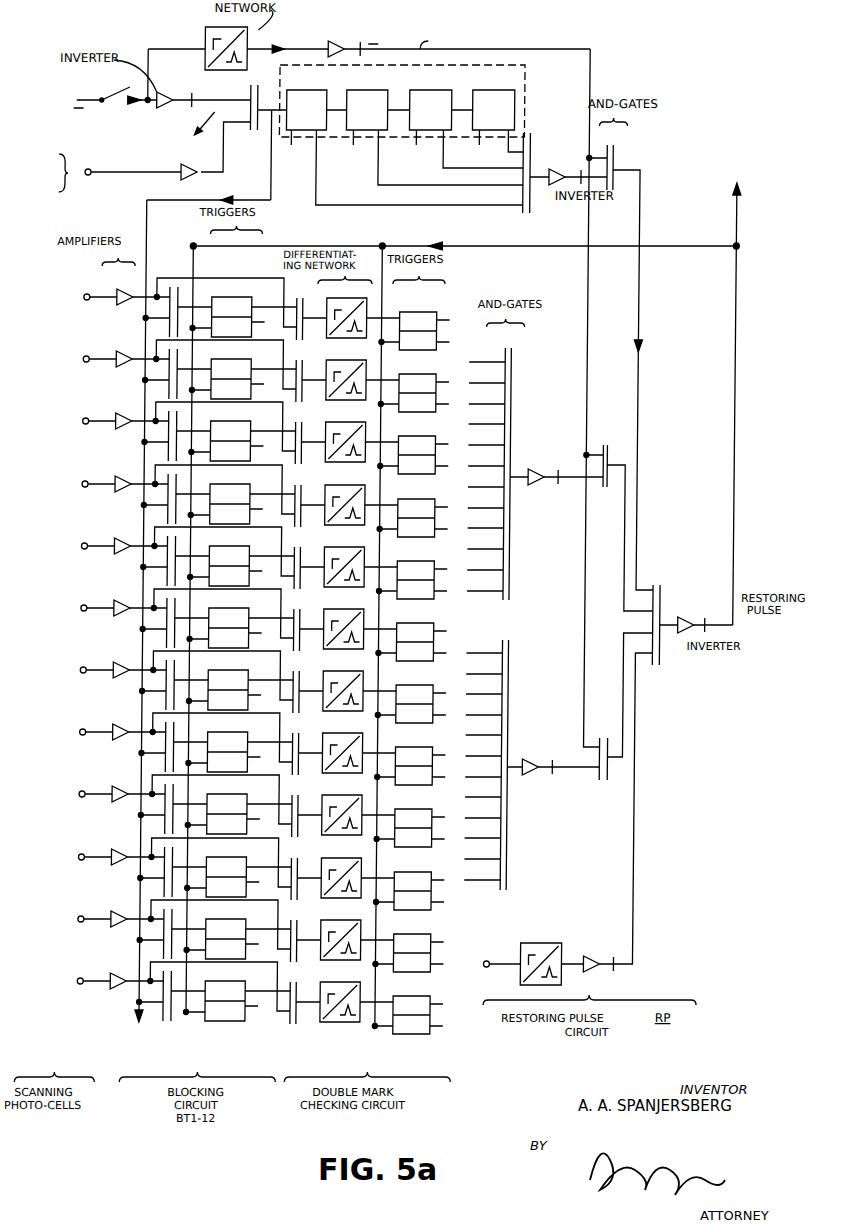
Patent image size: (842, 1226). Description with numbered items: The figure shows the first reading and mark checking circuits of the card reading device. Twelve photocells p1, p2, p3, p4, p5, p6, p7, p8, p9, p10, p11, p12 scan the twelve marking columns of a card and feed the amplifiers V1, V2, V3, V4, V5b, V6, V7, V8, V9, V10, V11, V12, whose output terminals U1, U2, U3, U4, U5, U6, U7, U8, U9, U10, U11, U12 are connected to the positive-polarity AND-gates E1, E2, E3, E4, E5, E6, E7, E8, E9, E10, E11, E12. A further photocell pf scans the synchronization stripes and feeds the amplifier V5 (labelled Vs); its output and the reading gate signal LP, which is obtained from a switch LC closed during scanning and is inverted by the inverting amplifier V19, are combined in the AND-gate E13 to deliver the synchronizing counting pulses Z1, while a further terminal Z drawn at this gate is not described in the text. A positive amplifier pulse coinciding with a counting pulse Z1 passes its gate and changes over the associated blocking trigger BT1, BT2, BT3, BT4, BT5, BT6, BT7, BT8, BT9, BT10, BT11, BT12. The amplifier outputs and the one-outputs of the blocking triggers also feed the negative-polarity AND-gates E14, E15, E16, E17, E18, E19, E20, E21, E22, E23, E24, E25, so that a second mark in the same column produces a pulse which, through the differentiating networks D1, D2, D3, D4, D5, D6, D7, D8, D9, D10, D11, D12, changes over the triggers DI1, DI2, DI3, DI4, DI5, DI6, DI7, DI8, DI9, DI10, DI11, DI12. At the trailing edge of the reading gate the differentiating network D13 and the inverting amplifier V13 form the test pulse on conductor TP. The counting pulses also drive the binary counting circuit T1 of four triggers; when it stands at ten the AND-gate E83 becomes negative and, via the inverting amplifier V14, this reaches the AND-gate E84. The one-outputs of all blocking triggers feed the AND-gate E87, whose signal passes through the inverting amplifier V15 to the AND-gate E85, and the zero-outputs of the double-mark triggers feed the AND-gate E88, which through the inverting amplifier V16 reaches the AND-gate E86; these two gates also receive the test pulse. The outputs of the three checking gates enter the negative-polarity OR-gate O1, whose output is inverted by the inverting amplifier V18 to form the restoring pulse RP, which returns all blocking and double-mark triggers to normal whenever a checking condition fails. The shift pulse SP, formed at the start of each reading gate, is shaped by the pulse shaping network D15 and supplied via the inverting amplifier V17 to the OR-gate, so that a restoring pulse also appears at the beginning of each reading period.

The light pulse input LP is at (74, 91).
The switch contact LC is at (126, 90).
The inverter amplifier V19 is at (204, 89).
The differentiating network D13 is at (238, 63).
The amplifier V13 is at (459, 38).
The counting pulse line TP is at (433, 39).
The AND gate E13 is at (244, 134).
The reset input Z is at (167, 122).
The sync mark photocell input pf is at (98, 171).
The amplifier for sync marks V5 is at (187, 164).
The binary counting circuit T1 is at (402, 135).
The AND gate E83 is at (536, 166).
The inverter V14 is at (577, 167).
The AND gate E84 is at (620, 360).
The restoring pulse line RP is at (465, 589).
The reset line Z1 is at (166, 614).
The photocell 1 p1 is at (89, 298).
The photocell 2 p2 is at (88, 360).
The photocell 3 p3 is at (88, 422).
The photocell 4 p4 is at (87, 485).
The photocell 5 p5 is at (86, 547).
The photocell 6 p6 is at (86, 609).
The photocell 7 p7 is at (85, 671).
The photocell 8 p8 is at (85, 733).
The photocell 9 p9 is at (84, 795).
The photocell 10 p10 is at (81, 858).
The photocell 11 p11 is at (81, 920).
The photocell 12 p12 is at (80, 982).
The amplifier V1 is at (139, 287).
The amplifier V2 is at (138, 349).
The amplifier V3 is at (138, 411).
The amplifier V4 is at (137, 474).
The amplifier V5b is at (136, 536).
The amplifier V6 is at (136, 598).
The amplifier V7 is at (135, 660).
The amplifier V8 is at (135, 722).
The amplifier V9 is at (134, 784).
The amplifier V10 is at (132, 847).
The amplifier V11 is at (132, 909).
The amplifier V12 is at (131, 971).
The AND gate E1 is at (177, 303).
The AND gate E2 is at (176, 365).
The AND gate E3 is at (176, 427).
The AND gate E4 is at (175, 490).
The AND gate E5 is at (175, 552).
The AND gate E6 is at (174, 614).
The AND gate E7 is at (173, 676).
The AND gate E8 is at (173, 738).
The AND gate E9 is at (172, 800).
The AND gate E10 is at (172, 863).
The AND gate E11 is at (171, 925).
The AND gate E12 is at (170, 1009).
The blocking trigger BT1 is at (243, 309).
The blocking trigger BT2 is at (242, 378).
The blocking trigger BT3 is at (242, 440).
The blocking trigger BT4 is at (241, 503).
The blocking trigger BT5 is at (241, 565).
The blocking trigger BT6 is at (240, 627).
The blocking trigger BT7 is at (239, 689).
The blocking trigger BT8 is at (239, 751).
The blocking trigger BT9 is at (238, 813).
The blocking trigger BT10 is at (238, 876).
The blocking trigger BT11 is at (237, 938).
The blocking trigger BT12 is at (236, 1015).
The feedback line U1 is at (227, 295).
The feedback line U2 is at (226, 357).
The feedback line U3 is at (225, 419).
The feedback line U4 is at (225, 482).
The feedback line U5 is at (224, 544).
The feedback line U6 is at (224, 606).
The feedback line U7 is at (223, 668).
The feedback line U8 is at (222, 730).
The feedback line U9 is at (222, 792).
The feedback line U10 is at (221, 855).
The feedback line U11 is at (221, 917).
The feedback line U12 is at (220, 979).
The AND gate E14 is at (311, 305).
The AND gate E15 is at (311, 367).
The AND gate E16 is at (310, 429).
The AND gate E17 is at (310, 492).
The AND gate E18 is at (309, 554).
The AND gate E19 is at (308, 616).
The AND gate E20 is at (308, 678).
The AND gate E21 is at (307, 740).
The AND gate E22 is at (307, 802).
The AND gate E23 is at (306, 865).
The AND gate E24 is at (305, 927).
The AND gate E25 is at (305, 1015).
The differentiating network D1 is at (363, 304).
The differentiating network D2 is at (363, 366).
The differentiating network D3 is at (362, 428).
The differentiating network D4 is at (362, 491).
The differentiating network D5 is at (361, 553).
The differentiating network D6 is at (360, 615).
The differentiating network D7 is at (360, 677).
The differentiating network D8 is at (359, 739).
The differentiating network D9 is at (359, 801).
The differentiating network D10 is at (358, 864).
The differentiating network D11 is at (357, 926).
The differentiating network D12 is at (357, 1015).
The trigger DI1 is at (418, 323).
The trigger DI2 is at (417, 385).
The trigger DI3 is at (417, 447).
The trigger DI4 is at (416, 510).
The trigger DI5 is at (415, 572).
The trigger DI6 is at (415, 634).
The trigger DI7 is at (414, 696).
The trigger DI8 is at (414, 758).
The trigger DI9 is at (413, 820).
The trigger DI10 is at (412, 883).
The trigger DI11 is at (412, 945).
The trigger DI12 is at (411, 1027).
The AND gate E87 is at (492, 469).
The amplifier V15 is at (564, 468).
The AND gate E85 is at (618, 520).
The AND gate E88 is at (486, 761).
The amplifier V16 is at (559, 758).
The AND gate E86 is at (620, 706).
The OR gate O1 is at (664, 609).
The inverter V18 is at (704, 615).
The shift pulse input SP is at (482, 958).
The differentiating network D15 is at (552, 955).
The amplifier V17 is at (617, 812).